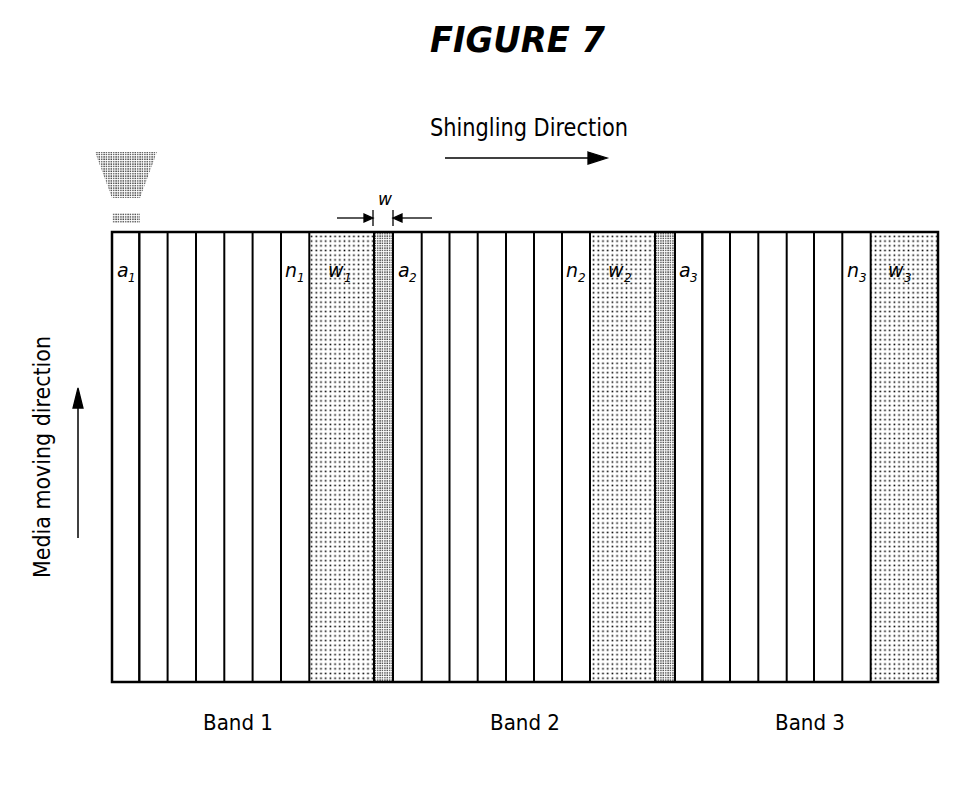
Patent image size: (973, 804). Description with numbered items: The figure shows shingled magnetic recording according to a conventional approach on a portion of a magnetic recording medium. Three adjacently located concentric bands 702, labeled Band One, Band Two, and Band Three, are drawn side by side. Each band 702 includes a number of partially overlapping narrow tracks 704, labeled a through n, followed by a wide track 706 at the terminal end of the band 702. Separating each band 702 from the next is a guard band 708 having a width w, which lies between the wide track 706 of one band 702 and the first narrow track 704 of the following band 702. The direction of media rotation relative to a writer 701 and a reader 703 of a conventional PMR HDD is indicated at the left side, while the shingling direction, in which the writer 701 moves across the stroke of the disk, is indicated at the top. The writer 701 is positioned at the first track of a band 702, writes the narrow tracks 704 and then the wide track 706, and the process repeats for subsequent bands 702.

The writer 701 is at (98, 162).
The band 702 is at (175, 708).
The reader 703 is at (112, 218).
The narrow track 704 is at (123, 672).
The wide track 706 is at (332, 673).
The guard band 708 is at (382, 673).